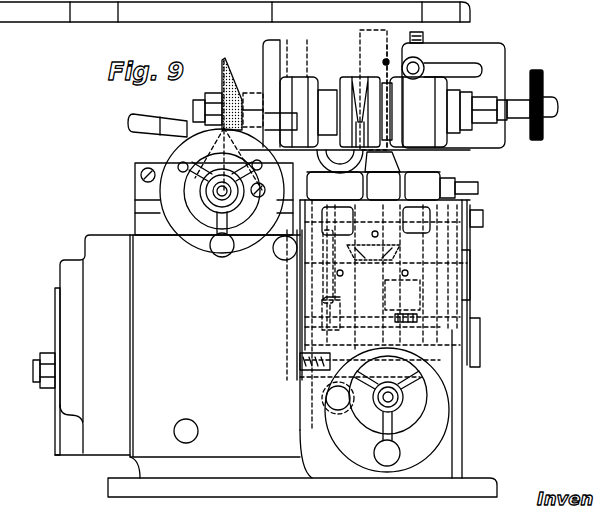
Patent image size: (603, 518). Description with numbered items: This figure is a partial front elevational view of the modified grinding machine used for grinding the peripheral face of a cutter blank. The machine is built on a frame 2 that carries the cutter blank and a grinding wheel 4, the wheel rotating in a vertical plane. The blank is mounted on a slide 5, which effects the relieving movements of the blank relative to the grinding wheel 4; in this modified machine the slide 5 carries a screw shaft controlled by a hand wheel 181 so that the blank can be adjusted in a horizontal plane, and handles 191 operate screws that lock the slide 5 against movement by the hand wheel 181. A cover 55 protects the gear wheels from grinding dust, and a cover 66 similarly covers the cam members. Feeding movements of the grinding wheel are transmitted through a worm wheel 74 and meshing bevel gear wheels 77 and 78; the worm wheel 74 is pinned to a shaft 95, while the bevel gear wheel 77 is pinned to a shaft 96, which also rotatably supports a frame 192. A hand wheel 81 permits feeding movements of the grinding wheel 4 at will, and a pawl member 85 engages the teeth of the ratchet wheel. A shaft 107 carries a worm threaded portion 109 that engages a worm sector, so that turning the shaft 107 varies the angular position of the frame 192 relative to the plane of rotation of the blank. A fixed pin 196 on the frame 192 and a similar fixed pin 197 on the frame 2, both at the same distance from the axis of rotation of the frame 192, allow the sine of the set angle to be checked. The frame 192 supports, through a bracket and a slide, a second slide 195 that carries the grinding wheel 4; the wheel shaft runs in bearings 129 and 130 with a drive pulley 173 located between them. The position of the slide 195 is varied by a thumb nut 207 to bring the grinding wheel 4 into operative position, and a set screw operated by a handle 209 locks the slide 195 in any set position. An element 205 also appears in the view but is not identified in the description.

The frame 2 is at (462, 456).
The grinding wheel 4 is at (228, 62).
The slide 5 is at (157, 163).
The cover 55 is at (85, 252).
The cover 66 is at (130, 458).
The worm wheel 74 is at (388, 312).
The bevel gear wheel 77 is at (336, 313).
The bevel gear wheel 78 is at (393, 245).
The hand wheel 81 is at (410, 447).
The pawl member 85 is at (433, 398).
The shaft 95 is at (468, 345).
The shaft 96 is at (468, 273).
The shaft 107 is at (326, 398).
The worm threaded portion 109 is at (345, 438).
The bearing 129 is at (303, 78).
The bearing 130 is at (425, 140).
The pulley 173 is at (352, 66).
The hand wheel 181 is at (244, 247).
The handles 191 is at (140, 116).
The frame 192 is at (443, 245).
The second slide 195 is at (498, 53).
The fixed pin 196 is at (478, 184).
The fixed pin 197 is at (483, 212).
The arm 205 is at (422, 62).
The thumb nut 207 is at (543, 72).
The handle 209 is at (465, 65).